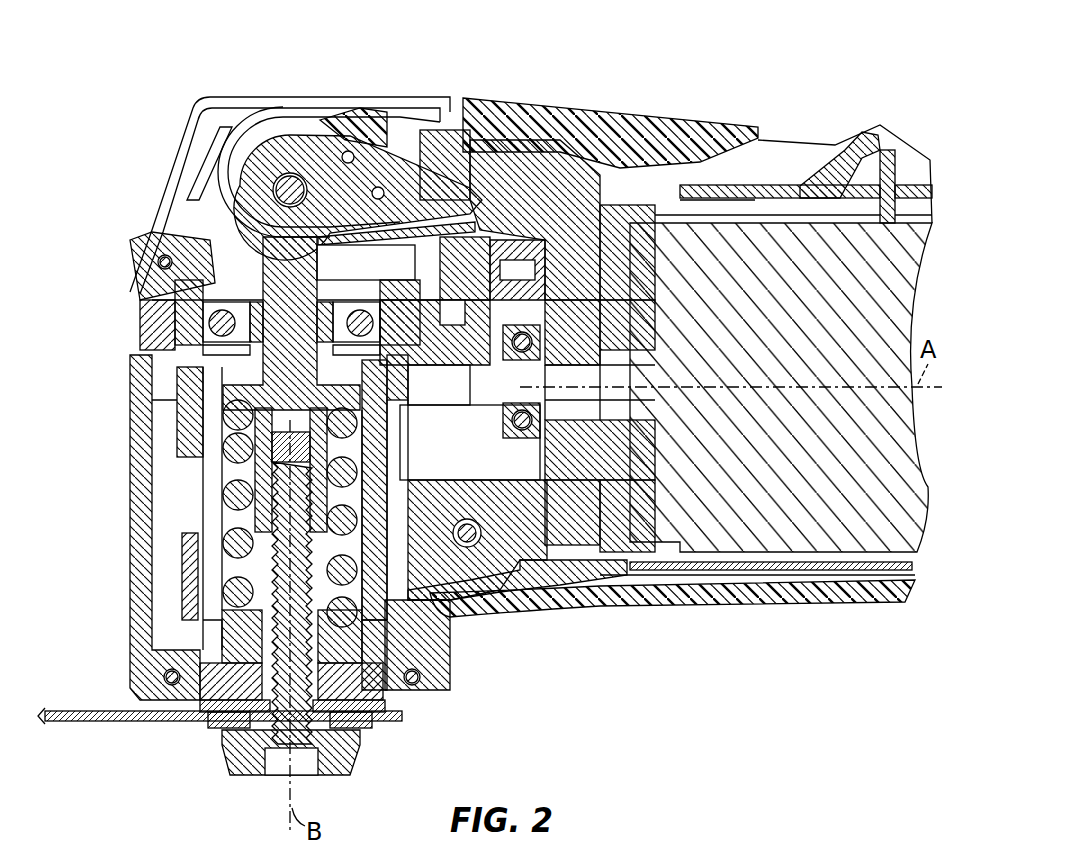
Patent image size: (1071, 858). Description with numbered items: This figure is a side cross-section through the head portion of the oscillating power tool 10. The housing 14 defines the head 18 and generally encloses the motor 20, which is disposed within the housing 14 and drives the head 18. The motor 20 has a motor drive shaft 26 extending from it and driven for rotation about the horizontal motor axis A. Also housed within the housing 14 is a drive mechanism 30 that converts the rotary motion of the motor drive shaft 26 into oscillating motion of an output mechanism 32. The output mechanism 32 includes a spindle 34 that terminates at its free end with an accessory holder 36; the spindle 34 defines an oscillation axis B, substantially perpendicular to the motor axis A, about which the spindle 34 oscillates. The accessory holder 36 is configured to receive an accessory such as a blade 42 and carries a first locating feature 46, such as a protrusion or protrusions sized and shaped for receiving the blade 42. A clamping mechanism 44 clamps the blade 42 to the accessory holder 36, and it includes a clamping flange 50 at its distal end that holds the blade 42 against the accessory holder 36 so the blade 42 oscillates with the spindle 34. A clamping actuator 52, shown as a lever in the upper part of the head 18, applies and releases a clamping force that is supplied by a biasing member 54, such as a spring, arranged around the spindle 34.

The power tool 10 is at (100, 142).
The housing 14 is at (752, 600).
The head 18 is at (356, 97).
The motor 20 is at (771, 265).
The motor drive shaft 26 is at (590, 330).
The drive mechanism 30 is at (523, 300).
The output mechanism 32 is at (186, 705).
The spindle 34 is at (215, 492).
The accessory holder 36 is at (377, 708).
The blade 42 is at (97, 710).
The clamping mechanism 44 is at (219, 767).
The first locating feature 46 is at (373, 725).
The clamping flange 50 is at (345, 750).
The clamping actuator 52 is at (672, 108).
The biasing member 54 is at (232, 432).